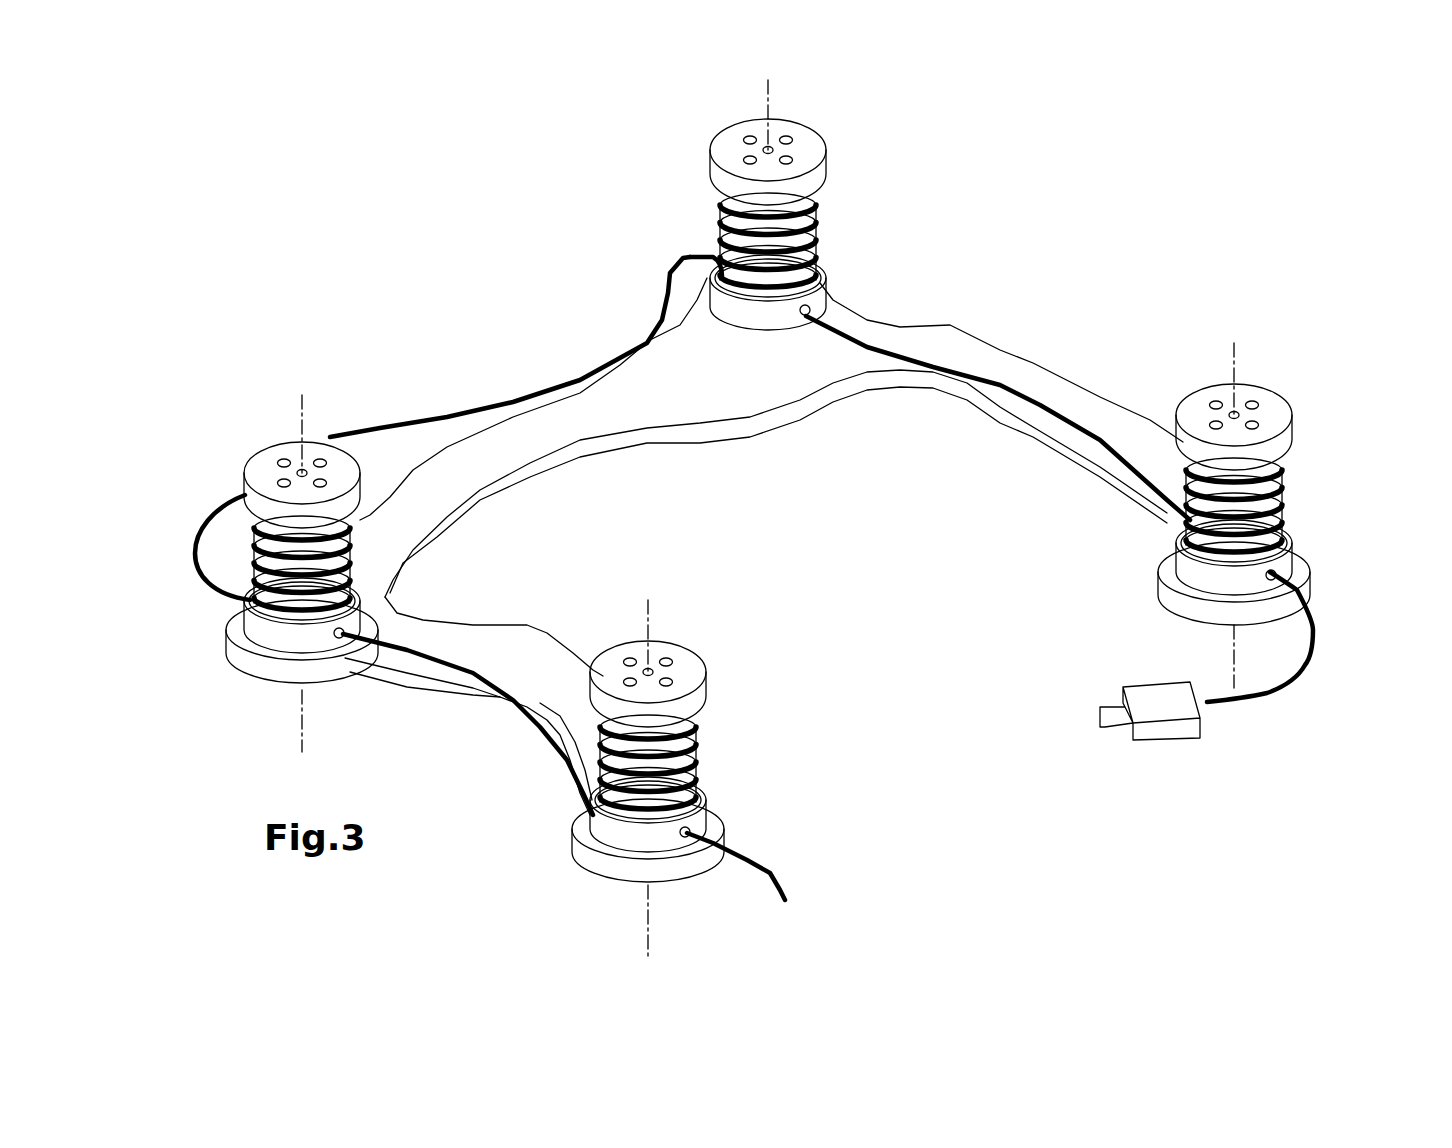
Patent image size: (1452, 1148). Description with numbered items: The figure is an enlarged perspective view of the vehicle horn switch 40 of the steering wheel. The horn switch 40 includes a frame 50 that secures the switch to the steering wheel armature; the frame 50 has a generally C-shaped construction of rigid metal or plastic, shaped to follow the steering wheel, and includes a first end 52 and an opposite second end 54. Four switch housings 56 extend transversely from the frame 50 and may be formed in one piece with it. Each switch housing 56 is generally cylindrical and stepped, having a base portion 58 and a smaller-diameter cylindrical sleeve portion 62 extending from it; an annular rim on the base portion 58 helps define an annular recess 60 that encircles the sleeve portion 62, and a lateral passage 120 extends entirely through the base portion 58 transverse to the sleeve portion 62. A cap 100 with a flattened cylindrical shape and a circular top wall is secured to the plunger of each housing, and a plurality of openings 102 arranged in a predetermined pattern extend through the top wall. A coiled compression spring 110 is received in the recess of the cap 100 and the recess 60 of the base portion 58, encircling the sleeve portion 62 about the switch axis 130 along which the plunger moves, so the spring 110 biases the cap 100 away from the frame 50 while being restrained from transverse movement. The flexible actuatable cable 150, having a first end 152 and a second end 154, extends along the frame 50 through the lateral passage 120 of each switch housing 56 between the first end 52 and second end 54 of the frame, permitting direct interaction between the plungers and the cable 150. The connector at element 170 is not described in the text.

The horn switch 40 is at (1080, 250).
The frame 50 is at (537, 470).
The first end 52 is at (1314, 571).
The second end 54 is at (607, 883).
The switch housing 56 is at (1298, 508).
The base portion 58 is at (757, 321).
The annular recess 60 is at (723, 275).
The sleeve portion 62 is at (726, 422).
The cap 100 is at (781, 513).
The openings 102 is at (742, 160).
The coiled compression spring 110 is at (826, 224).
The lateral passage 120 is at (815, 307).
The switch axis 130 is at (772, 94).
The actuatable cable 150 is at (508, 385).
The first end 152 is at (1290, 691).
The second end 154 is at (782, 862).
The connector 170 is at (1171, 728).